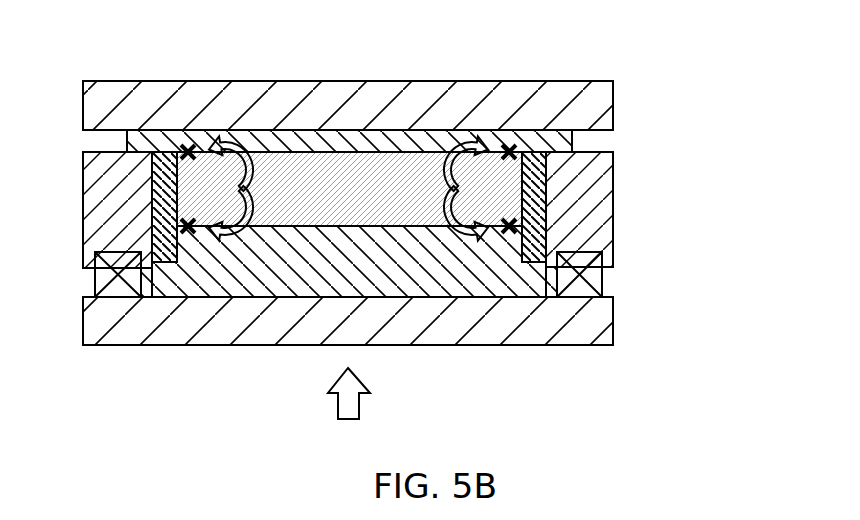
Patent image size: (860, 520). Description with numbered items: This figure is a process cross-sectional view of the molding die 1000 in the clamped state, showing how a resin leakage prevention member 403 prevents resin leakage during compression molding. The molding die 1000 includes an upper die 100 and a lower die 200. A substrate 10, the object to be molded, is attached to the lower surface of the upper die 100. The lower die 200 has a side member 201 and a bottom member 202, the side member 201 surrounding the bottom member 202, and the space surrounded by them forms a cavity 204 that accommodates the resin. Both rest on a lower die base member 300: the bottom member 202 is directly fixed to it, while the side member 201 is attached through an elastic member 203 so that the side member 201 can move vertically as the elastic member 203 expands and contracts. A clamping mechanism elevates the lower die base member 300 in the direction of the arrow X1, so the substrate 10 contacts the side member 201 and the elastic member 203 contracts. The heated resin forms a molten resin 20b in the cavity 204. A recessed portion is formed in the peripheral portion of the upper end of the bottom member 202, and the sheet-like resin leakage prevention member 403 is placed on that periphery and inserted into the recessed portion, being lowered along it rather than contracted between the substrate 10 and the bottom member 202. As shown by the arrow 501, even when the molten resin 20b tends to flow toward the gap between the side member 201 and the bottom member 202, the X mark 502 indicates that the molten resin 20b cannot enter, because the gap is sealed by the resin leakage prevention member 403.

The upper die 100 is at (598, 108).
The substrate 10 is at (557, 142).
The side member 201 is at (603, 174).
The resin leakage prevention member 403 is at (167, 212).
The cavity 204 is at (522, 212).
The molten resin 20b is at (200, 177).
The bottom member 202 is at (500, 248).
The elastic member 203 is at (580, 278).
The lower die base member 300 is at (599, 320).
The arrow 501 is at (232, 150).
The X mark 502 is at (188, 146).
The lower die 200 is at (698, 152).
The molding die 1000 is at (773, 80).
The arrow X1 is at (338, 405).